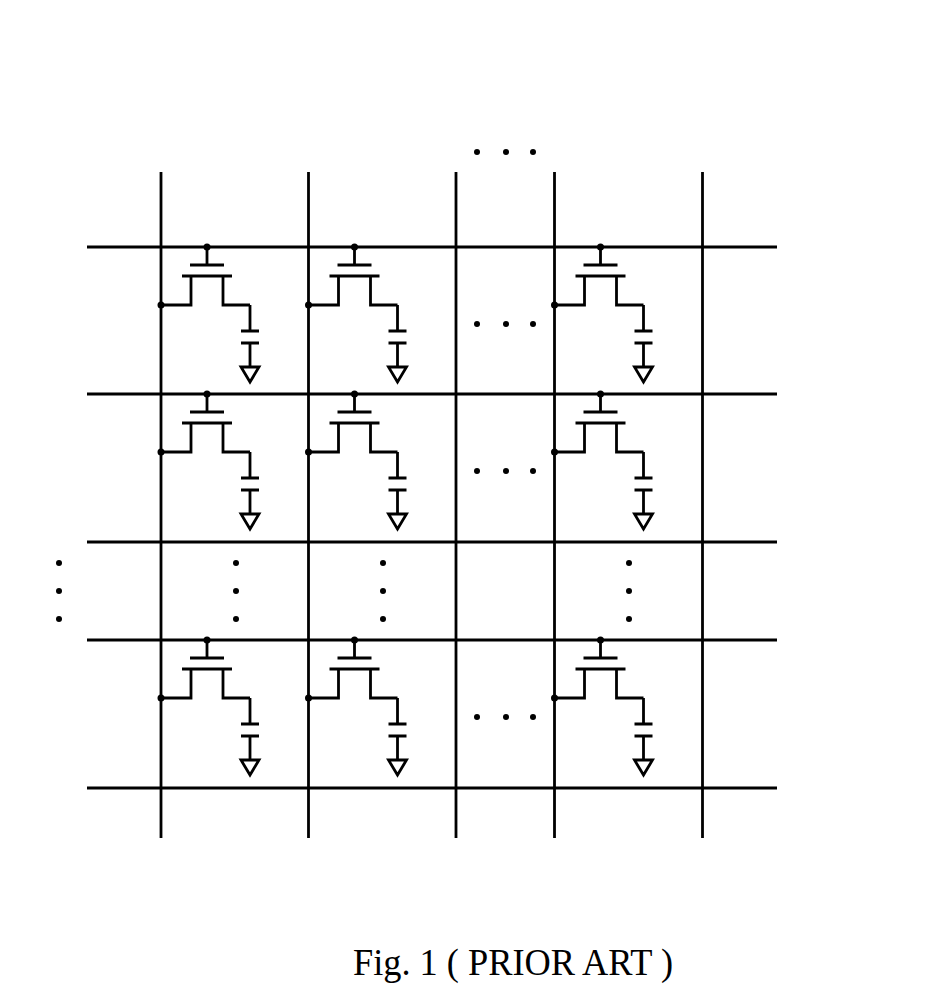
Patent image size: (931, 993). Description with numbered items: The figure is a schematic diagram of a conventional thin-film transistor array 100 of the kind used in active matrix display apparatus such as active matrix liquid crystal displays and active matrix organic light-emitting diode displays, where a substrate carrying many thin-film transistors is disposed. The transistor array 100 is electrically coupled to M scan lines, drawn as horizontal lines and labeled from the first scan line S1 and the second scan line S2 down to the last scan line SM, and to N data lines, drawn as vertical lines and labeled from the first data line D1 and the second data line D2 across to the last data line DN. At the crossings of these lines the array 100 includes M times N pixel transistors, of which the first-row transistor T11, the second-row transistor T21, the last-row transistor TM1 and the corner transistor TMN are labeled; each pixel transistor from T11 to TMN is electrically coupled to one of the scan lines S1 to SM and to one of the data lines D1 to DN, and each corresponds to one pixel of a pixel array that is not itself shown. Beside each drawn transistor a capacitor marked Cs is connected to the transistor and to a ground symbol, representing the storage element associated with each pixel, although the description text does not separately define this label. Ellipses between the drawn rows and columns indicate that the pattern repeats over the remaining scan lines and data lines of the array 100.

The transistor array 100 is at (167, 44).
The first data line D1 is at (165, 486).
The second data line D2 is at (313, 486).
The N-th data line DN is at (708, 486).
The first scan line S1 is at (410, 245).
The second scan line S2 is at (410, 395).
The M-th scan line SM is at (407, 790).
The pixel transistor T11 is at (204, 292).
The pixel transistor T21 is at (204, 439).
The pixel transistor TM1 is at (204, 686).
The pixel transistor TMN is at (597, 687).
The storage capacitor Cs is at (466, 540).